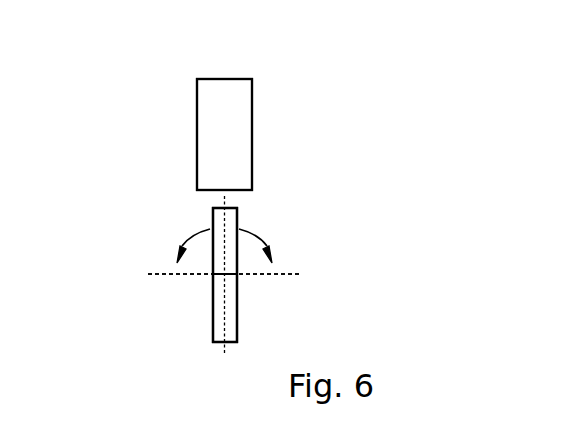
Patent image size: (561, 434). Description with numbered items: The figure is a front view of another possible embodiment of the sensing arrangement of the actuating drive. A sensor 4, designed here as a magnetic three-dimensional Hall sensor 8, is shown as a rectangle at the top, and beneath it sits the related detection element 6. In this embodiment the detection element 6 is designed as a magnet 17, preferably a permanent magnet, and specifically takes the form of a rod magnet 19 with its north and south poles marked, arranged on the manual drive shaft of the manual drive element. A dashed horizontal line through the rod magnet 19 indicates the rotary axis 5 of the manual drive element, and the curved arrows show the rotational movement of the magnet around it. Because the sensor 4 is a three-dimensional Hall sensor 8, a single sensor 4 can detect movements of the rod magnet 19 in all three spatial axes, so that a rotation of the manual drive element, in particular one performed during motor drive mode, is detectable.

The sensor 4 is at (220, 116).
The magnetic 3D Hall sensor 8 is at (224, 134).
The detection element 6 is at (215, 290).
The magnet 17 is at (225, 275).
The rod magnet 19 is at (225, 275).
The rotary axis 5 is at (288, 275).